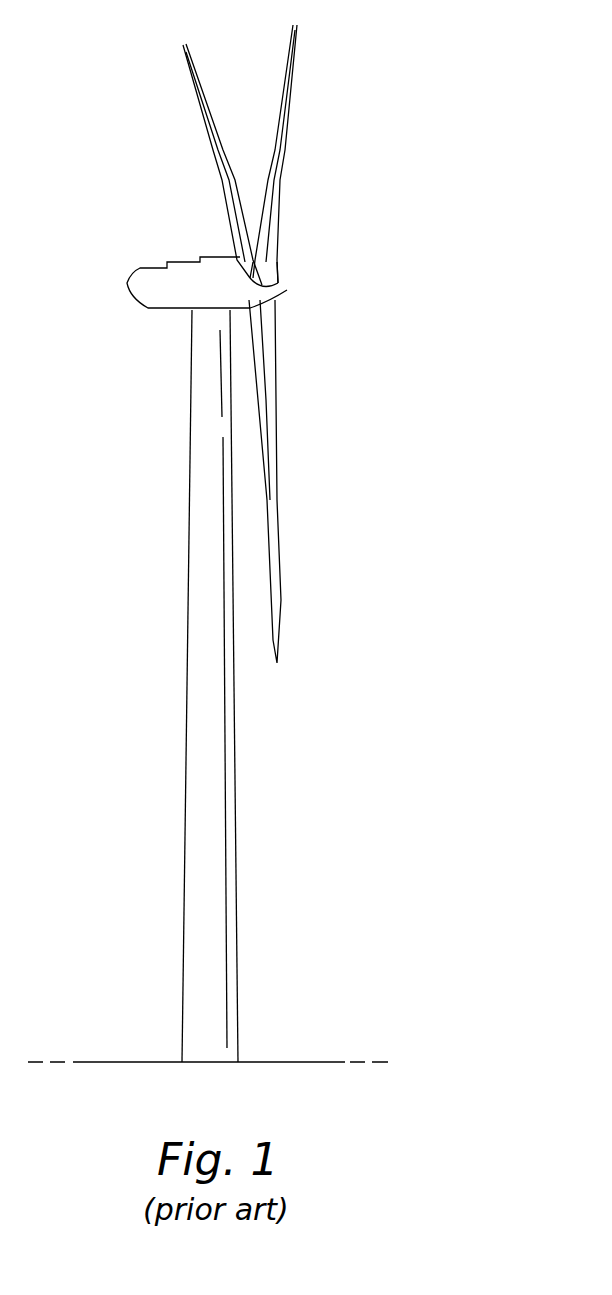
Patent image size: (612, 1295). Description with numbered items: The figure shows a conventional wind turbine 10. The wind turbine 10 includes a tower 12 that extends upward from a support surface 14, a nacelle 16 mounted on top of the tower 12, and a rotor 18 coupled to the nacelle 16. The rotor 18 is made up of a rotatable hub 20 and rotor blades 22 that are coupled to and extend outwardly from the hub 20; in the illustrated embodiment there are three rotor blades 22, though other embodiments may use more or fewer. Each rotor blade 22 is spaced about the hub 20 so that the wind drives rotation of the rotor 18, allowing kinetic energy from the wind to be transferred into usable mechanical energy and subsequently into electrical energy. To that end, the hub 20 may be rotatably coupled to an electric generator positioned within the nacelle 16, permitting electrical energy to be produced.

The wind turbine 10 is at (397, 188).
The tower 12 is at (212, 800).
The support surface 14 is at (152, 1060).
The nacelle 16 is at (163, 310).
The rotor 18 is at (292, 272).
The hub 20 is at (282, 283).
The rotor blade 22 is at (208, 97).